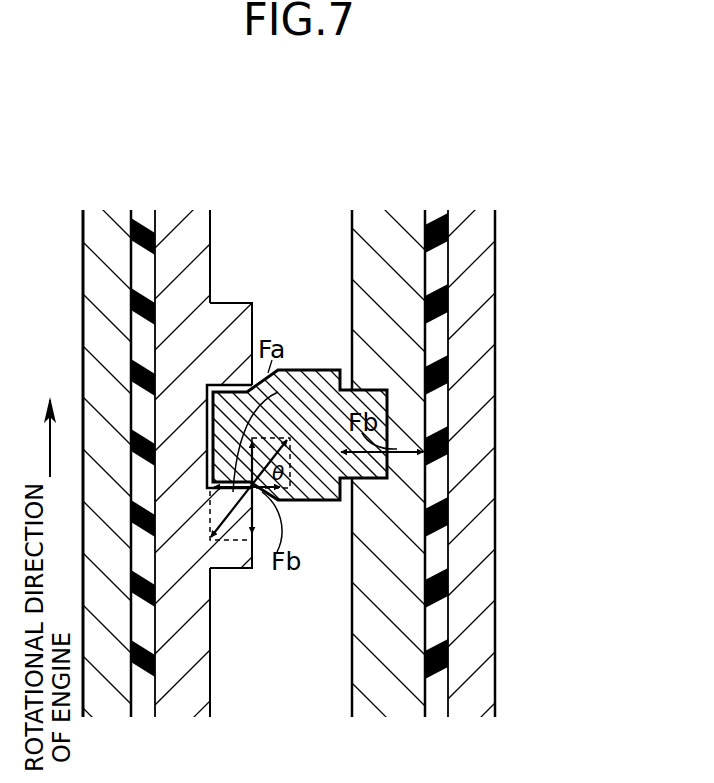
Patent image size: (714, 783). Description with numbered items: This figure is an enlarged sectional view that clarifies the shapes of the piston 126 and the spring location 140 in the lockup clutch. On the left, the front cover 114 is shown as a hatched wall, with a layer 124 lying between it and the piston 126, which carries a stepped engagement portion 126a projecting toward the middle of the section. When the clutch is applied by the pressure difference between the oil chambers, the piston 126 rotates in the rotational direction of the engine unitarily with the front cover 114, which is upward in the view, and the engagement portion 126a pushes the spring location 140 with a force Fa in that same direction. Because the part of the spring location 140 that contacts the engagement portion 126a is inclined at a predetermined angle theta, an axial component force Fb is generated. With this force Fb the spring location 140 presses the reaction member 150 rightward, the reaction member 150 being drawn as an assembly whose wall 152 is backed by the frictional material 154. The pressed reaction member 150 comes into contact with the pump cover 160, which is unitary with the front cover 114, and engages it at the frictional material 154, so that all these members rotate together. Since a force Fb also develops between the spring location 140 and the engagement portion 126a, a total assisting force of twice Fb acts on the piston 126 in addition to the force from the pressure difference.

The front cover 114 is at (98, 227).
The gasket 124 is at (143, 220).
The piston 126 is at (193, 227).
The engagement portion 126a is at (230, 572).
The spring location 140 is at (320, 393).
The reaction member 150 is at (422, 421).
The cover 152 is at (390, 225).
The frictional material 154 is at (435, 215).
The pump cover 160 is at (480, 273).